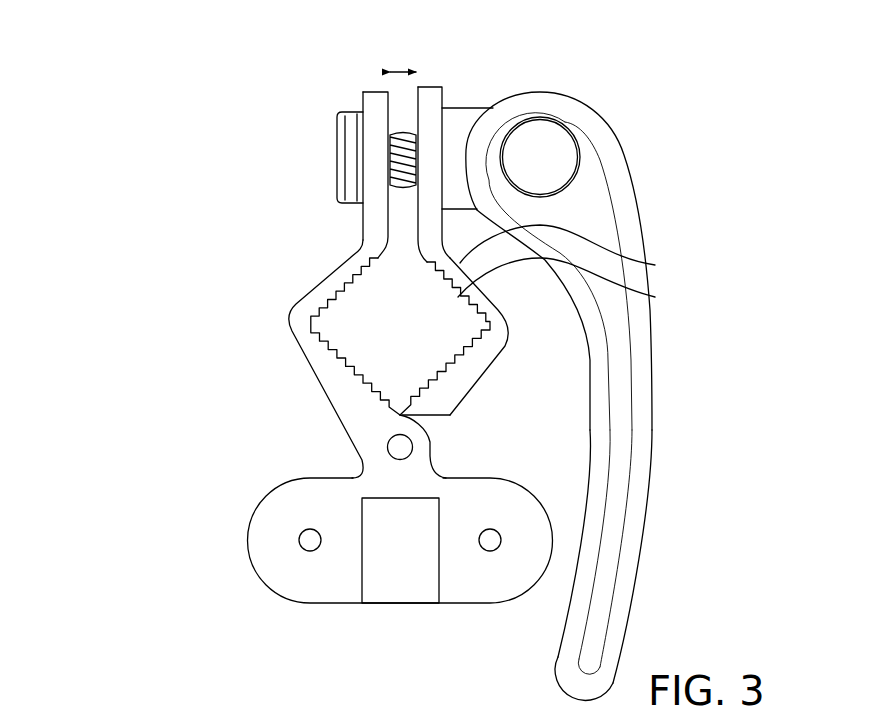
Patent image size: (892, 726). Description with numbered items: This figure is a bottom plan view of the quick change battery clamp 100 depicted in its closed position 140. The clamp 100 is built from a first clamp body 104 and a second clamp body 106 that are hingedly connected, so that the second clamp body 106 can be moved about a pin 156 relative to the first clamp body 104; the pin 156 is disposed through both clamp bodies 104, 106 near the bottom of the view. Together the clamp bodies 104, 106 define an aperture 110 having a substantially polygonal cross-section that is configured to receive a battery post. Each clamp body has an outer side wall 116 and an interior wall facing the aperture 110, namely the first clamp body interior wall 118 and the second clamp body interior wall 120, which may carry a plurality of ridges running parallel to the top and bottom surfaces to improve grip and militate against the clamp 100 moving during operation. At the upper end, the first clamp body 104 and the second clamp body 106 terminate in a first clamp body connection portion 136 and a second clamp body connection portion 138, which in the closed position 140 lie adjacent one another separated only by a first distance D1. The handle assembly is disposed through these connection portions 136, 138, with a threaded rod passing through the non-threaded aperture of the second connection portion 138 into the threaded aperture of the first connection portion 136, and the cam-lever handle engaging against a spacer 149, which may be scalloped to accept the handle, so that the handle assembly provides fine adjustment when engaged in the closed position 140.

The quick change battery clamp 100 is at (106, 84).
The first clamp body 104 is at (307, 366).
The second clamp body 106 is at (478, 389).
The aperture 110 is at (375, 324).
The side wall 116 is at (352, 257).
The first clamp body interior wall 118 is at (316, 318).
The second clamp body interior wall 120 is at (655, 297).
The first clamp body connection portion 136 is at (361, 88).
The second clamp body connection portion 138 is at (445, 86).
The closed position 140 is at (674, 550).
The spacer 149 is at (472, 107).
The pin 156 is at (397, 448).
The first distance D1 is at (403, 70).